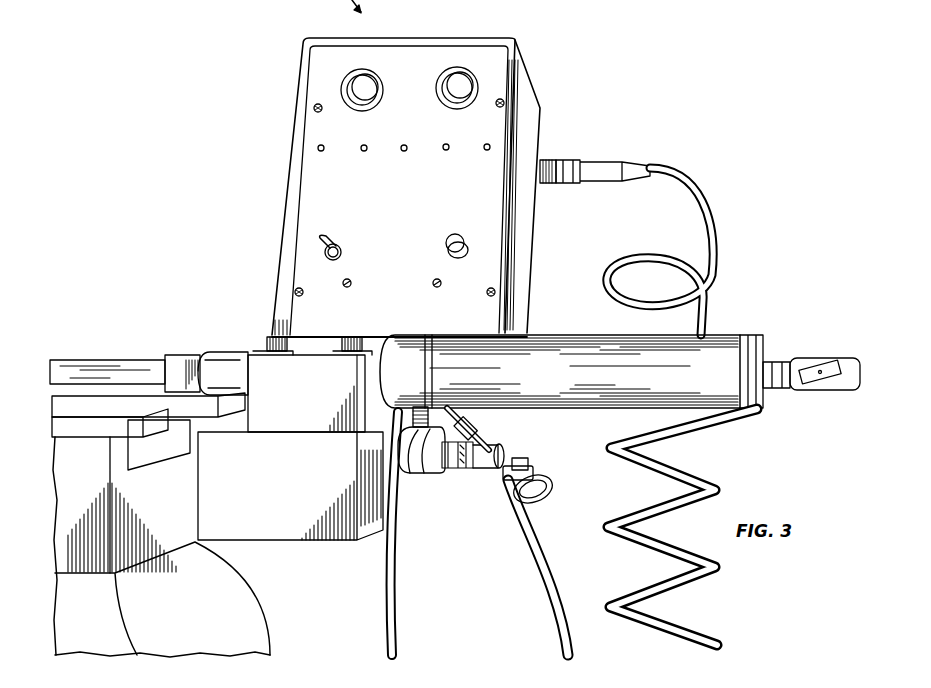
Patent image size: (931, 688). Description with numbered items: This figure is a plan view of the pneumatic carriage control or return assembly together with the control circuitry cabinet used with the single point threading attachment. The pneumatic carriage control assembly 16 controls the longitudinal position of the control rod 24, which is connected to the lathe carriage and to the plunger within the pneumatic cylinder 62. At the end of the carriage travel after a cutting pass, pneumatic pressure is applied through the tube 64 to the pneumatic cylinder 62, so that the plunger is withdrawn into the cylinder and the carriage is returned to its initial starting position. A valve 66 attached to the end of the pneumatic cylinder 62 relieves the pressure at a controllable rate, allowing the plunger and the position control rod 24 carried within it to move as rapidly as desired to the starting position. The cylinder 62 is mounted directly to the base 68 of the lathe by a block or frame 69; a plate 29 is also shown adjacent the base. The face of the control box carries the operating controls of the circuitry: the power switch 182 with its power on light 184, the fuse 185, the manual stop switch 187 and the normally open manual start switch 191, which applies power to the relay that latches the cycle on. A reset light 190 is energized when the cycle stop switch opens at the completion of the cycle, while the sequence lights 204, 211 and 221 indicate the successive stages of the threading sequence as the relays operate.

The pneumatic carriage control assembly 16 is at (585, 421).
The control rod 24 is at (125, 360).
The mounting plate 29 is at (62, 420).
The pneumatic cylinder 62 is at (576, 336).
The tube 64 is at (545, 570).
The valve 66 is at (815, 388).
The base 68 is at (357, 540).
The block or frame 69 is at (308, 385).
The switch 182 is at (323, 243).
The power on light 184 is at (318, 148).
The fuse 185 is at (450, 240).
The manual stop switch 187 is at (450, 85).
The reset light 190 is at (490, 147).
The manual start switch 191 is at (362, 88).
The sequence light 204 is at (365, 145).
The sequence light 211 is at (403, 151).
The sequence light 221 is at (446, 144).